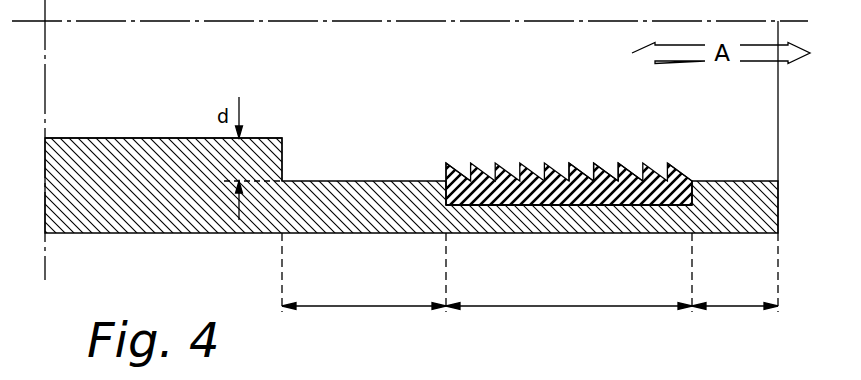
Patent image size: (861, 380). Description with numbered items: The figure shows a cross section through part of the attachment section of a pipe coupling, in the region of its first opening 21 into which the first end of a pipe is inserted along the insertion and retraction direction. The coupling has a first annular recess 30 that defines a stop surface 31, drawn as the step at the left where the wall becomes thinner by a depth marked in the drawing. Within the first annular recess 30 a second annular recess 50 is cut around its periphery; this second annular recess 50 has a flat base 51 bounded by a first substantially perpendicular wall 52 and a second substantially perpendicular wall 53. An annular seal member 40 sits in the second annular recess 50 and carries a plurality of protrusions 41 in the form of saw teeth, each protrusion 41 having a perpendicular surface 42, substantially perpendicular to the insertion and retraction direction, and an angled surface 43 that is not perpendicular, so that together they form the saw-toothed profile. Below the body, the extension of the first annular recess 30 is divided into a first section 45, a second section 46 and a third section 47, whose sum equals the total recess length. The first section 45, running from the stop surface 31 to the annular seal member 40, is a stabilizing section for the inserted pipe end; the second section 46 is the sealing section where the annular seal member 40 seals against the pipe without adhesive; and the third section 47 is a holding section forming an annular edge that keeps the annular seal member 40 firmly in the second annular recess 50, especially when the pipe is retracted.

The first opening 21 is at (780, 120).
The first annular recess 30 is at (345, 181).
The stop surface 31 is at (283, 157).
The annular seal member 40 is at (647, 158).
The protrusions 41 is at (617, 140).
The perpendicular surface 42 is at (586, 168).
The angled surface 43 is at (603, 168).
The first section 45 is at (364, 272).
The second section 46 is at (569, 272).
The third section 47 is at (735, 272).
The second annular recess 50 is at (586, 207).
The flat base 51 is at (515, 208).
The first substantially perpendicular wall 52 is at (447, 189).
The second substantially perpendicular wall 53 is at (694, 186).